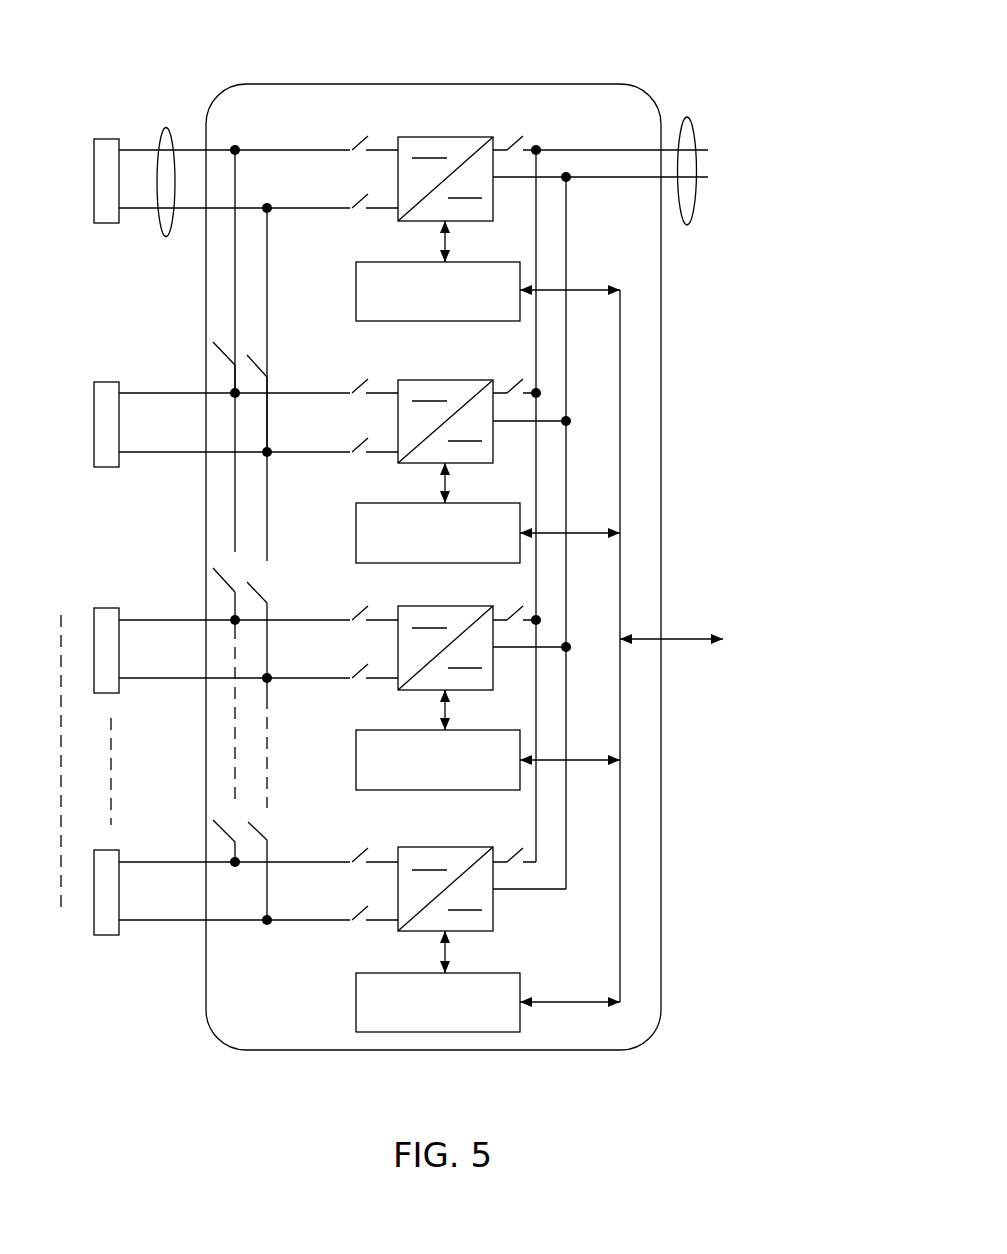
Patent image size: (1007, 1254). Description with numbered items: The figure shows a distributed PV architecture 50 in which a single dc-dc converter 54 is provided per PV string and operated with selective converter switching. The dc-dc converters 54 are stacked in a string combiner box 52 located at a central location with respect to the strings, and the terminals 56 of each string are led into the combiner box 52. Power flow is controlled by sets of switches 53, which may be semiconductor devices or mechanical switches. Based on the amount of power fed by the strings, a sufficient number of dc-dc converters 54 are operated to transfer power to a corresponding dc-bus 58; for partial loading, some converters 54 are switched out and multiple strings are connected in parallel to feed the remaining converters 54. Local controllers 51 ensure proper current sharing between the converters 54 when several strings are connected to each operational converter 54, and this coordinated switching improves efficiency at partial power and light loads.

The distributed PV architecture 50 is at (240, 30).
The local controller 51 is at (356, 283).
The string combiner box 52 is at (661, 322).
The sets of switches 53 is at (358, 205).
The dc-dc converter 54 is at (445, 137).
The terminals 56 is at (158, 222).
The dc-bus 58 is at (687, 117).